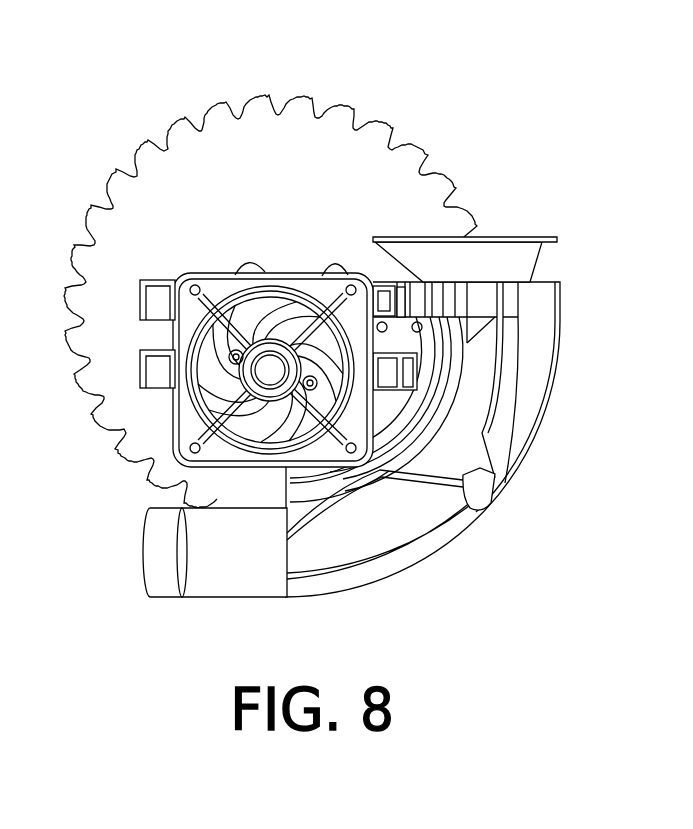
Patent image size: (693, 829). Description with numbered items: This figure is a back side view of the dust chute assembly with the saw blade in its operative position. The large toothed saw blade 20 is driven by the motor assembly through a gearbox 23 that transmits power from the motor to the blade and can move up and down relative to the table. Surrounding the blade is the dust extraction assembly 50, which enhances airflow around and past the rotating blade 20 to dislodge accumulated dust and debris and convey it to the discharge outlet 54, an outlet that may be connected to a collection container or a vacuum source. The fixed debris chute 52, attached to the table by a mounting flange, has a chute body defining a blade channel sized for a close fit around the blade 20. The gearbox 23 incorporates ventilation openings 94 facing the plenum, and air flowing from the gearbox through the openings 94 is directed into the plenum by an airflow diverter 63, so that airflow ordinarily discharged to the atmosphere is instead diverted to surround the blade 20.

The blade 20 is at (372, 152).
The gearbox 23 is at (197, 280).
The ventilation openings 94 is at (324, 317).
The airflow diverter 63 is at (380, 282).
The fixed debris chute 52 is at (520, 263).
The dust extraction assembly 50 is at (560, 333).
The discharge outlet 54 is at (165, 570).